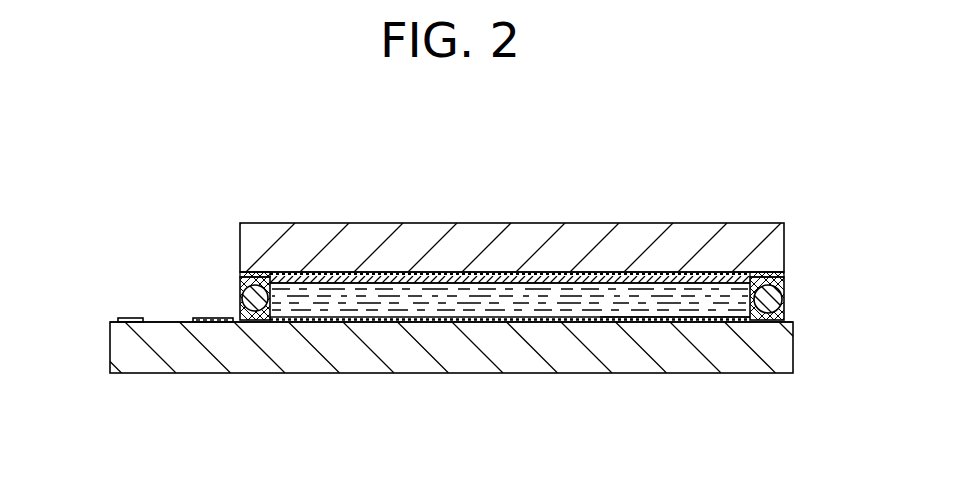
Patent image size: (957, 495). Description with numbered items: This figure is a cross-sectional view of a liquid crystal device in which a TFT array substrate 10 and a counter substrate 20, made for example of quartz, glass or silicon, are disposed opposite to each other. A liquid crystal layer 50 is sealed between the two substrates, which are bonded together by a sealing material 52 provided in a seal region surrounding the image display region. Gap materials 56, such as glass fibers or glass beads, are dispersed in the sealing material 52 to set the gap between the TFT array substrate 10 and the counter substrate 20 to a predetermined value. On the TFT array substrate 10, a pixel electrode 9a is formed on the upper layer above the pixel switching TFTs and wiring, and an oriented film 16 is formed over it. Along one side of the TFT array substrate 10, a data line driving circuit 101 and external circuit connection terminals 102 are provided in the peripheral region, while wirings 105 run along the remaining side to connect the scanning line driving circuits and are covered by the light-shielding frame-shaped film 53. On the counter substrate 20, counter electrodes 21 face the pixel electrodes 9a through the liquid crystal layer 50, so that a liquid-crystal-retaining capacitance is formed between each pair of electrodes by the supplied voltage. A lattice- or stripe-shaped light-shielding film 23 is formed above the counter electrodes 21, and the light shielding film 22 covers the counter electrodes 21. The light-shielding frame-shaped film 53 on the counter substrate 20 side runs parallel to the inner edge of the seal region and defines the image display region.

The TFT array substrate 10 is at (539, 373).
The pixel electrode 9a is at (330, 323).
The counter substrate 20 is at (397, 223).
The counter electrode 21 is at (627, 272).
The light shielding film 22 is at (531, 288).
The light-shielding film 23 is at (456, 275).
The liquid crystal layer 50 is at (458, 303).
The oriented film 16 is at (634, 312).
The wirings 105 is at (733, 323).
The gap material 56 is at (257, 323).
The light-shielding frame-shaped film 53 is at (283, 273).
The sealing material 52 is at (241, 286).
The data line driving circuit 101 is at (208, 317).
The external circuit connection terminals 102 is at (120, 318).